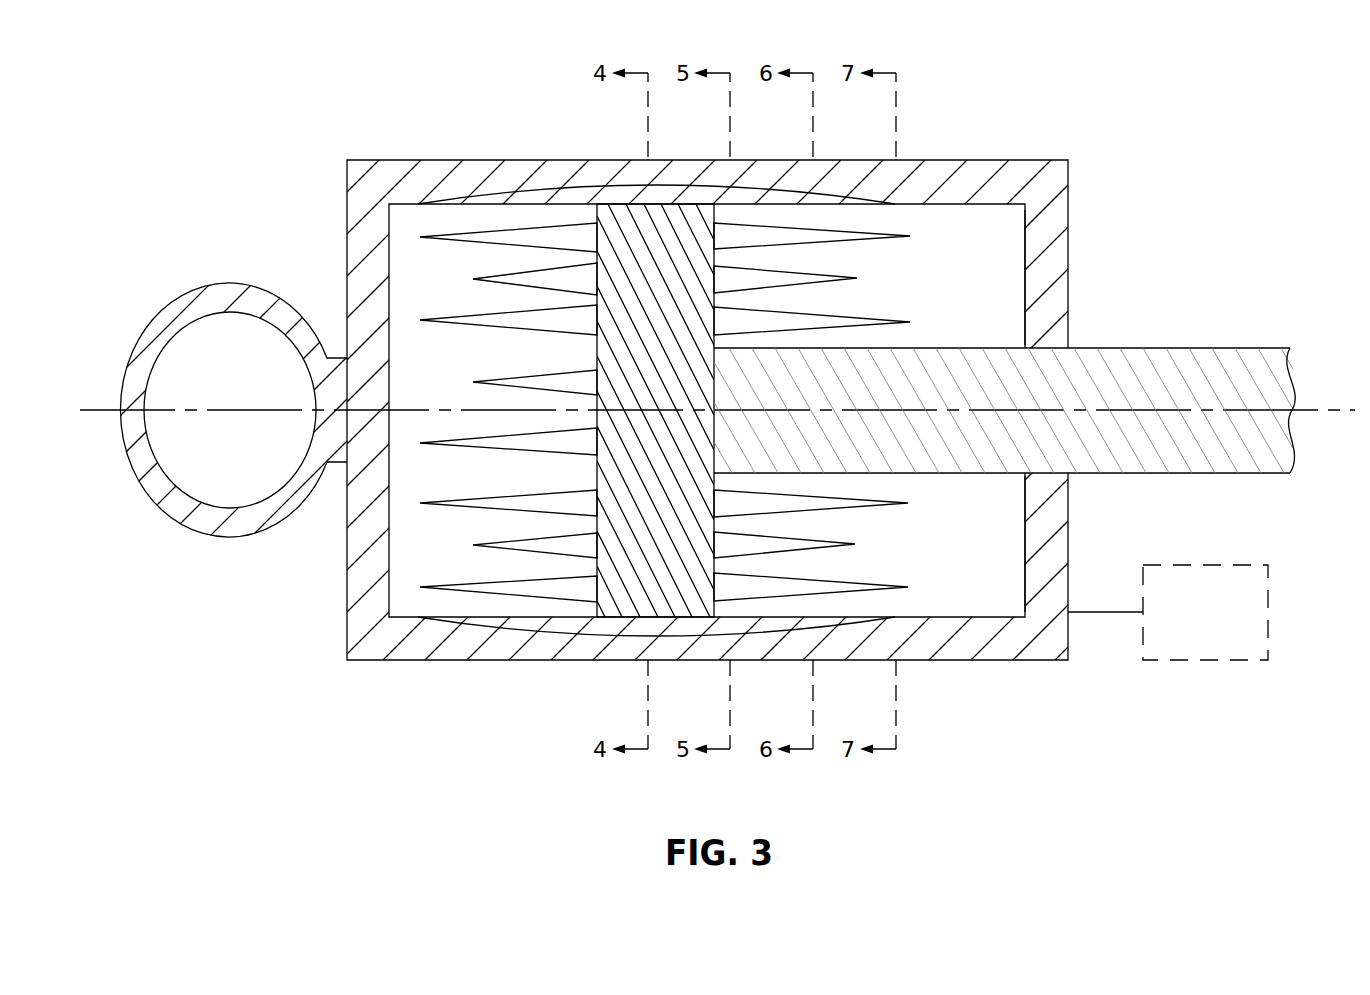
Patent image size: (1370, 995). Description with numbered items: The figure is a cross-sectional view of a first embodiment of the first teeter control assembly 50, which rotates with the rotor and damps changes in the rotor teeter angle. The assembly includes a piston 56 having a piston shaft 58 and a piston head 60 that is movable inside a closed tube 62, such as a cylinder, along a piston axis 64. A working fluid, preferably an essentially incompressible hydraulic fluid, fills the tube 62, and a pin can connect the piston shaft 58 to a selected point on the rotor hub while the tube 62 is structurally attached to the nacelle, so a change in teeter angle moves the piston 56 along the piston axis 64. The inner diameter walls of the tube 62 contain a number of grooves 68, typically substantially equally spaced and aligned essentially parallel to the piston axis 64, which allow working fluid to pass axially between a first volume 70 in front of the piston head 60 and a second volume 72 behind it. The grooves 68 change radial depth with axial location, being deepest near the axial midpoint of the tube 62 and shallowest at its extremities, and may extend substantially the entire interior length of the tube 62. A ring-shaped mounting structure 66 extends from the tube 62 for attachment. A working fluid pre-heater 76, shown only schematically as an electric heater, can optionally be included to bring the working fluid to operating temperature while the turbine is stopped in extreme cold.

The first teeter control assembly 50 is at (717, 456).
The piston 56 is at (1113, 353).
The piston shaft 58 is at (1208, 348).
The piston head 60 is at (620, 602).
The closed tube 62 is at (1033, 166).
The piston axis 64 is at (1323, 410).
The attachment ring 66 is at (230, 283).
The grooves 68 is at (542, 193).
The first volume 70 is at (412, 217).
The second volume 72 is at (947, 287).
The working fluid pre-heater 76 is at (1268, 603).